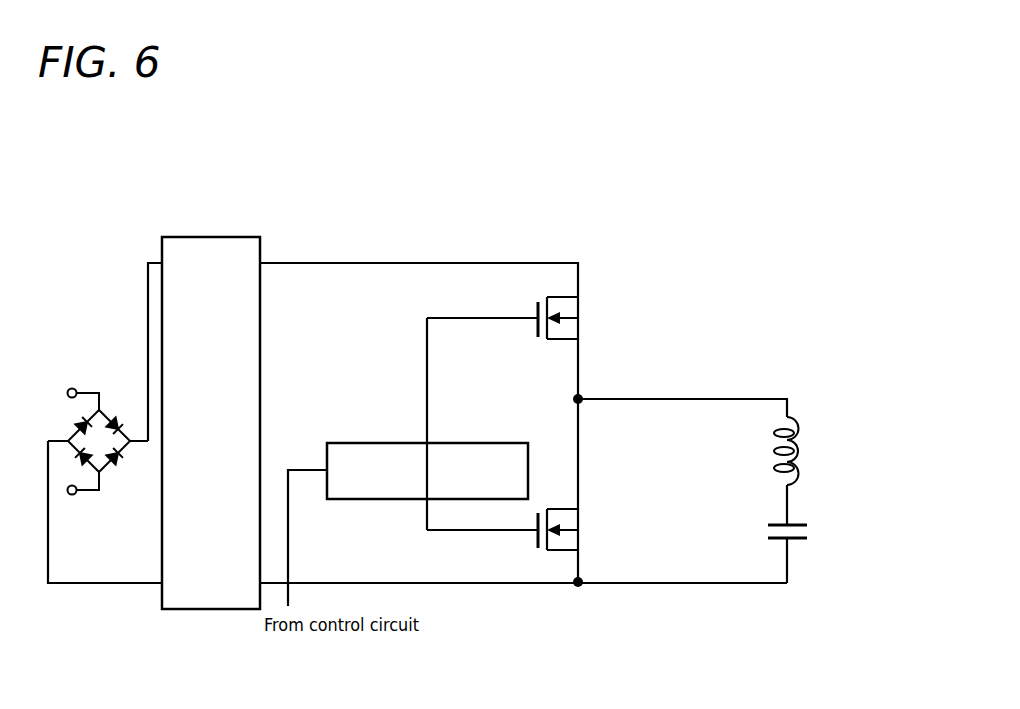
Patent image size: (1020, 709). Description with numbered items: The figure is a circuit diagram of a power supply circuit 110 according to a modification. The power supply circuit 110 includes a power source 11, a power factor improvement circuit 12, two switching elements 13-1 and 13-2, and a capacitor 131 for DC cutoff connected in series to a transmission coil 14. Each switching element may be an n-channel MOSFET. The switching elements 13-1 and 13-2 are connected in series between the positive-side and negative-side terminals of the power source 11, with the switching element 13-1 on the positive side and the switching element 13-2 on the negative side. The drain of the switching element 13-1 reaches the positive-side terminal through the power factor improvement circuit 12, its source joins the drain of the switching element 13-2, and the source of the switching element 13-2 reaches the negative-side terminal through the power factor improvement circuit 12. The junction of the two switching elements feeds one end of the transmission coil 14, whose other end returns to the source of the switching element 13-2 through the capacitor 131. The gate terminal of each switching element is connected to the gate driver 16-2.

The power source 11 is at (110, 374).
The power factor improvement circuit 12 is at (262, 371).
The gate driver 16-2 is at (366, 443).
The switching element 13-1 is at (586, 319).
The switching element 13-2 is at (586, 531).
The power supply circuit 110 is at (741, 329).
The transmission coil 14 is at (812, 452).
The capacitor 131 is at (815, 535).